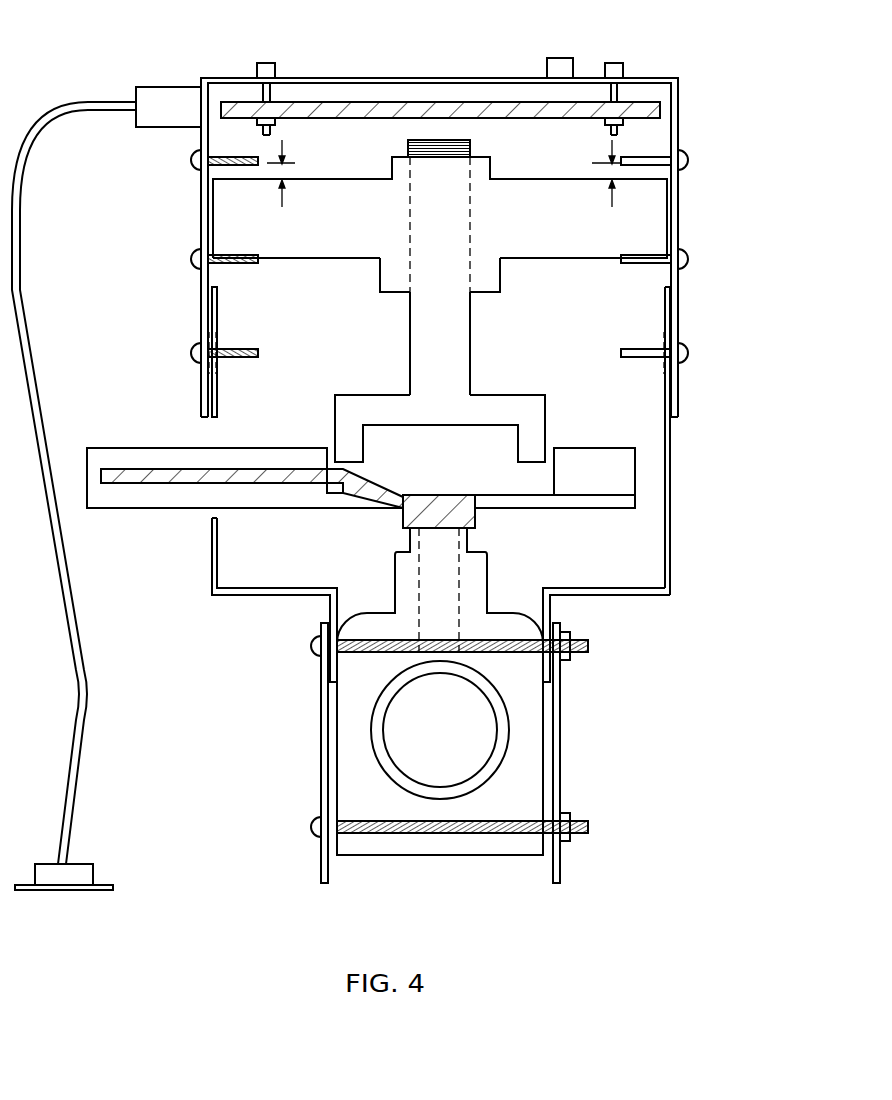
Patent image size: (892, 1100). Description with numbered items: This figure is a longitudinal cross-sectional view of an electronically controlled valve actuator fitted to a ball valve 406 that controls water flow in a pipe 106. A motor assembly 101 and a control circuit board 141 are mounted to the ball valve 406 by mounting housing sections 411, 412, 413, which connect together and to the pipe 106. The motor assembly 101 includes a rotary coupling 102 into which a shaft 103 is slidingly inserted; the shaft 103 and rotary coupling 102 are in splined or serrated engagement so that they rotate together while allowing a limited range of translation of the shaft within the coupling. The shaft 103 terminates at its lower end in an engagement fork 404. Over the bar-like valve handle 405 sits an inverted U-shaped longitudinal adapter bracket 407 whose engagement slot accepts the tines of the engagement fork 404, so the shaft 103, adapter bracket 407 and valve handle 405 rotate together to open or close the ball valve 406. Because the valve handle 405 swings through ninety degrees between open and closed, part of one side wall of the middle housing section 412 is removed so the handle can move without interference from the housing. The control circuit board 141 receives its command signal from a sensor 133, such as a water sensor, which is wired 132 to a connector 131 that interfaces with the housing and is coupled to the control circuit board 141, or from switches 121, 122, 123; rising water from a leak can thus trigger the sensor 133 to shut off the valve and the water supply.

The motor assembly 101 is at (650, 218).
The rotary coupling 102 is at (505, 275).
The shaft 103 is at (470, 318).
The pipe 106 is at (500, 745).
The switch 121 is at (553, 68).
The switch 122 is at (560, 68).
The switch 123 is at (560, 68).
The connector 131 is at (158, 95).
The wire 132 is at (88, 695).
The sensor 133 is at (95, 875).
The control circuit board 141 is at (660, 110).
The engagement fork 404 is at (519, 450).
The valve handle 405 is at (163, 468).
The ball valve 406 is at (543, 710).
The adapter bracket 407 is at (165, 508).
The mounting housing section 411 is at (450, 78).
The middle housing section 412 is at (670, 573).
The mounting housing section 413 is at (320, 720).